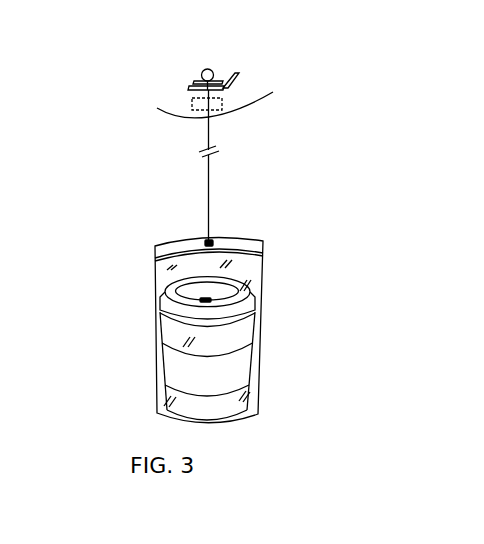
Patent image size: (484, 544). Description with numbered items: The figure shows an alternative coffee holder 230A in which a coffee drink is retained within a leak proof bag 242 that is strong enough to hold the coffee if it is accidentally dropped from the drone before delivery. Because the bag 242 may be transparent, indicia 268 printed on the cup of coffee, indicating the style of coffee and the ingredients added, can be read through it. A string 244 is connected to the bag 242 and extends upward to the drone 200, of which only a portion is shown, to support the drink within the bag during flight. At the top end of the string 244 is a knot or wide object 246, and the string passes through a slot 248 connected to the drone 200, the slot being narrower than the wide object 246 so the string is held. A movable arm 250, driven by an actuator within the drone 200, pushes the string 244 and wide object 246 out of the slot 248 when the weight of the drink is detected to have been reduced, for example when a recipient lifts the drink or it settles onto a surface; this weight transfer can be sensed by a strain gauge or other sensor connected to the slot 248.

The drone 200 is at (166, 119).
The string 244 is at (215, 203).
The knot or wide object 246 is at (210, 69).
The slot 248 is at (180, 97).
The movable arm 250 is at (244, 78).
The coffee holder 230A is at (113, 246).
The bag 242 is at (162, 280).
The indicia 268 is at (172, 370).